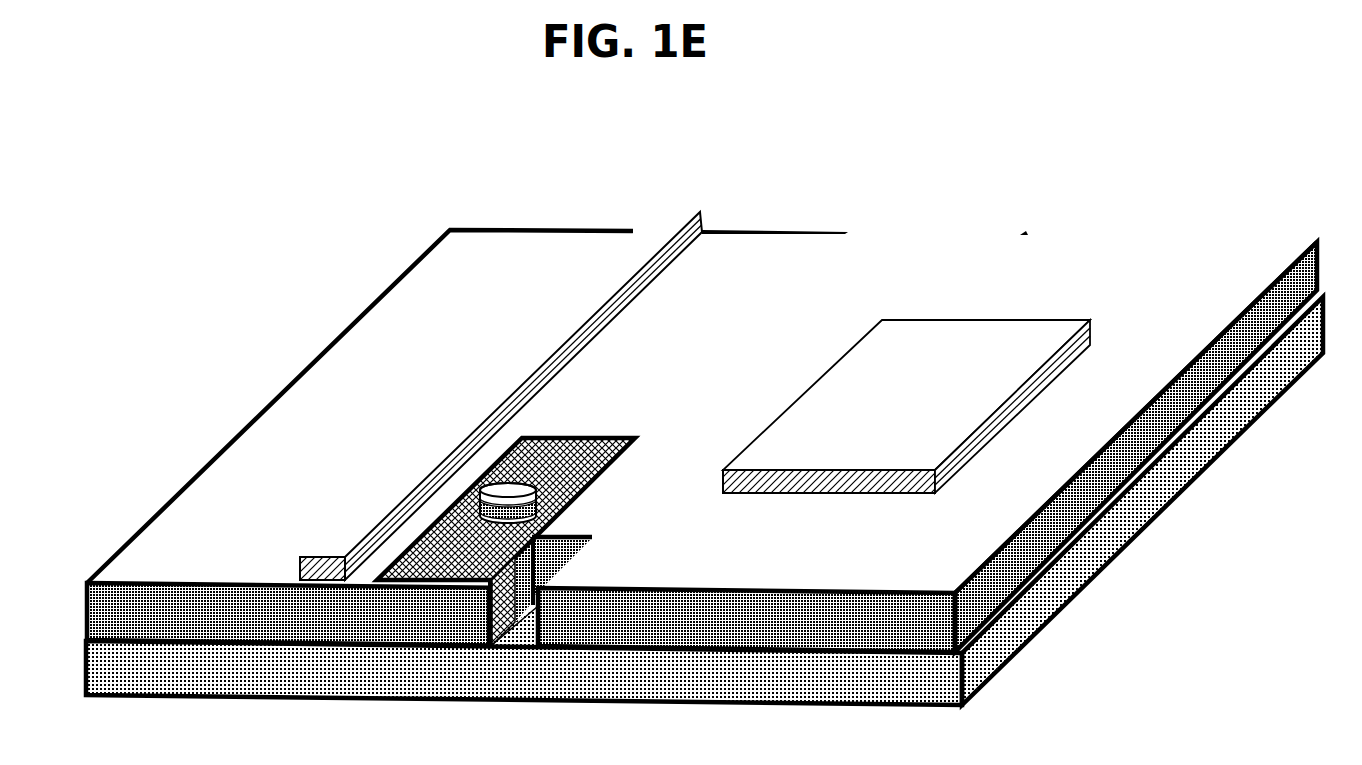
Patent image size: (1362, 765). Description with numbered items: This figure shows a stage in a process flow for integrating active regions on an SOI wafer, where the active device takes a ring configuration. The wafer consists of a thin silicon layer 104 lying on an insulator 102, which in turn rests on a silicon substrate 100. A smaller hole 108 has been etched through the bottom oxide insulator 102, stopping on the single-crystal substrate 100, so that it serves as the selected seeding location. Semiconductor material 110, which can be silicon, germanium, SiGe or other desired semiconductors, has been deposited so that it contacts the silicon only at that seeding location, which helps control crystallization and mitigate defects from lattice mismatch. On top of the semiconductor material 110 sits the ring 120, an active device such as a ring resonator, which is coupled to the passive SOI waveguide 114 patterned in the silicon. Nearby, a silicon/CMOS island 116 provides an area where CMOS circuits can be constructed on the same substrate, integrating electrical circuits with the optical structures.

The silicon substrate 100 is at (1240, 422).
The insulator 102 is at (1300, 292).
The thin silicon layer 104 is at (1290, 239).
The smaller hole 108 is at (522, 641).
The semiconductor material 110 is at (560, 431).
The waveguide 114 is at (668, 208).
The silicon/CMOS island 116 is at (983, 340).
The ring 120 is at (525, 482).